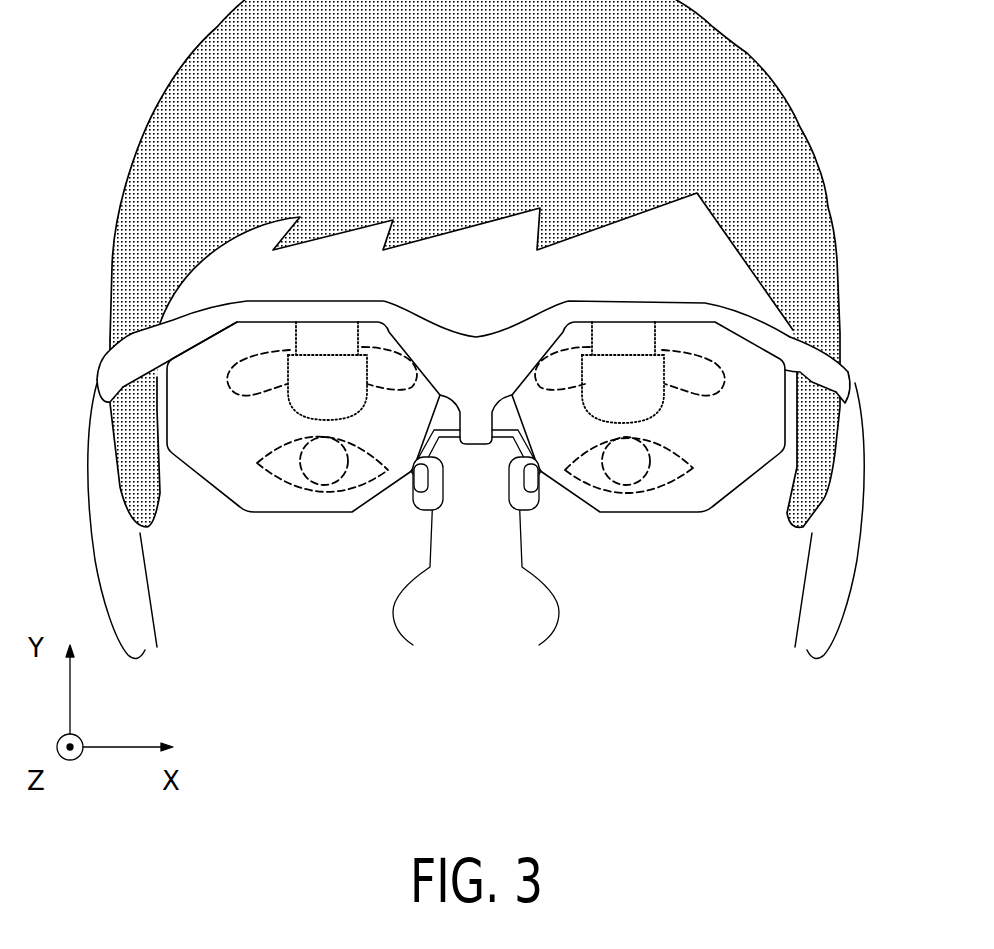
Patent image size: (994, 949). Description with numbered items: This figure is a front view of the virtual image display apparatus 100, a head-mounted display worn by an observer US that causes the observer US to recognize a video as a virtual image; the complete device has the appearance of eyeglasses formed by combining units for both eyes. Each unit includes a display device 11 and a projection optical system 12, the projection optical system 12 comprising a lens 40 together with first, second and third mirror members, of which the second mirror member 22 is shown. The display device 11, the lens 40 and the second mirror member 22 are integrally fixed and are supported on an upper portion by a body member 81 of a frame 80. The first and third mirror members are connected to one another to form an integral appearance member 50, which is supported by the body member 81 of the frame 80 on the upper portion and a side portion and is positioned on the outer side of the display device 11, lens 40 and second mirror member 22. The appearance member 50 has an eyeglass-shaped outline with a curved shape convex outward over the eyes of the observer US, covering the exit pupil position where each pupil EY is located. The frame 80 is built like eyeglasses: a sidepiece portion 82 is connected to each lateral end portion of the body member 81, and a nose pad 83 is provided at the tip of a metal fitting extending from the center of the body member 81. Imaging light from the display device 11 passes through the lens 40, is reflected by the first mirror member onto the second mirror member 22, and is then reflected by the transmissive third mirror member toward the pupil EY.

The virtual image display apparatus 100 is at (475, 373).
The projection optical system 12 is at (475, 412).
The display device 11 is at (478, 329).
The lens 40 is at (478, 415).
The second mirror member 22 is at (504, 461).
The appearance member 50 is at (300, 500).
The frame 80 is at (160, 323).
The body member 81 is at (348, 310).
The sidepiece portion 82 is at (107, 378).
The nose pad 83 is at (510, 490).
The observer US is at (123, 190).
The pupil EY is at (655, 597).